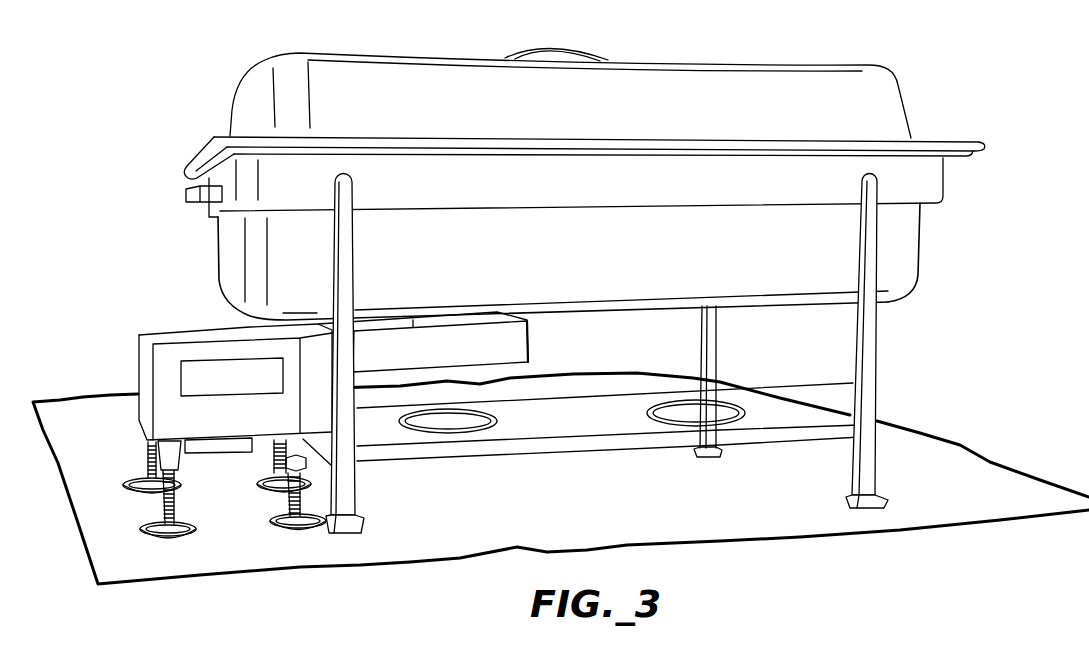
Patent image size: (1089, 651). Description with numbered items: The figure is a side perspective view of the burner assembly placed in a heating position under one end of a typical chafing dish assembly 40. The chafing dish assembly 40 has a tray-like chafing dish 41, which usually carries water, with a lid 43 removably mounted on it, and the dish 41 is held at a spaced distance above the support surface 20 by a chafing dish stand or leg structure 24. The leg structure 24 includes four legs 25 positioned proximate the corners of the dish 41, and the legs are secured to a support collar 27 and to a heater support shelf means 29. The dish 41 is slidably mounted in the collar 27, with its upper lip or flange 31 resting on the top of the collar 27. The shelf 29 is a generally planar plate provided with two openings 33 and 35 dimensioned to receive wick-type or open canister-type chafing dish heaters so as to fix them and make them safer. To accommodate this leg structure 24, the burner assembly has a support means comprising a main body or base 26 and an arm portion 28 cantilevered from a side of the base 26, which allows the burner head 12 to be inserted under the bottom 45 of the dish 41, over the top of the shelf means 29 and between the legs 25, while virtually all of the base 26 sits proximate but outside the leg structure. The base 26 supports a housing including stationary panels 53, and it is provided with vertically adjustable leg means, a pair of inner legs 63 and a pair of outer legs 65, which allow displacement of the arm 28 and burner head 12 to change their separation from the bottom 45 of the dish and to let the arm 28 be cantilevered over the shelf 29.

The burner head 12 is at (428, 320).
The support surface 20 is at (783, 529).
The chafing dish stand or leg structure 24 is at (910, 376).
The legs 25 is at (362, 494).
The main body or base 26 is at (236, 418).
The support collar 27 is at (476, 200).
The arm portion 28 is at (420, 365).
The heater support shelf means 29 is at (574, 420).
The upper lip or flange 31 is at (205, 148).
The opening 33 is at (684, 416).
The opening 35 is at (468, 420).
The chafing dish assembly 40 is at (222, 77).
The chafing dish 41 is at (596, 268).
The lid 43 is at (688, 78).
The bottom 45 is at (614, 312).
The stationary panels 53 is at (178, 408).
The inner legs 63 is at (260, 488).
The outer legs 65 is at (158, 502).